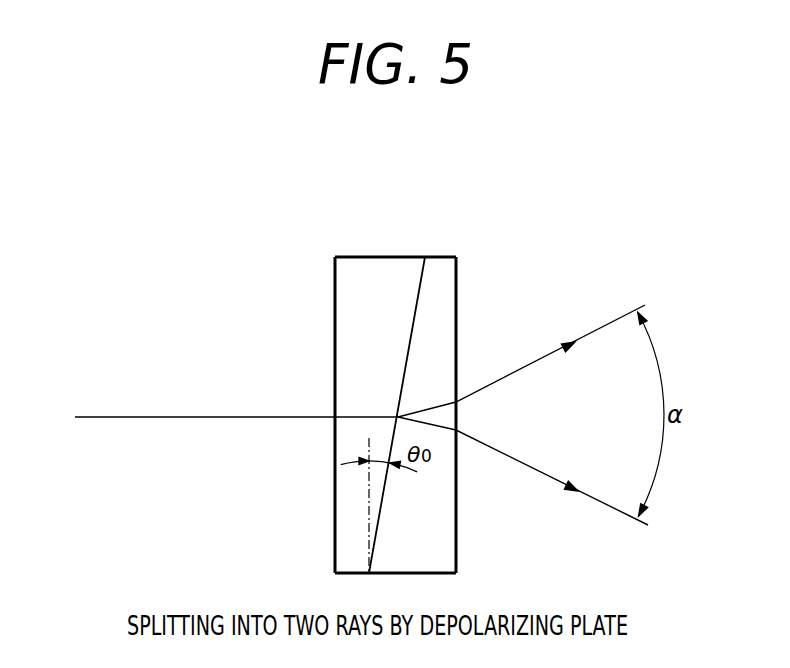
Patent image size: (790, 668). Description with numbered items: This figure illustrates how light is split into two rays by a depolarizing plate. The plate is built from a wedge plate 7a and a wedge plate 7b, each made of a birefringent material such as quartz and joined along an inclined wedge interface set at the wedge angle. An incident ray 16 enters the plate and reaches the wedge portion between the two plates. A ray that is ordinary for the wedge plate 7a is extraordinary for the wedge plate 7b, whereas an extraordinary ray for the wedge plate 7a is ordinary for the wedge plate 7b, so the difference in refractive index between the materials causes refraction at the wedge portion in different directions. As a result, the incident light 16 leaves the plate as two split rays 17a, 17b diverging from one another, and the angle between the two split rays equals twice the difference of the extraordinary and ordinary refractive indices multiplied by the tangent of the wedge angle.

The wedge plate 7a is at (398, 267).
The wedge plate 7b is at (450, 280).
The incident light ray 16 is at (156, 416).
The first split ray 17a is at (593, 331).
The second split ray 17b is at (537, 471).